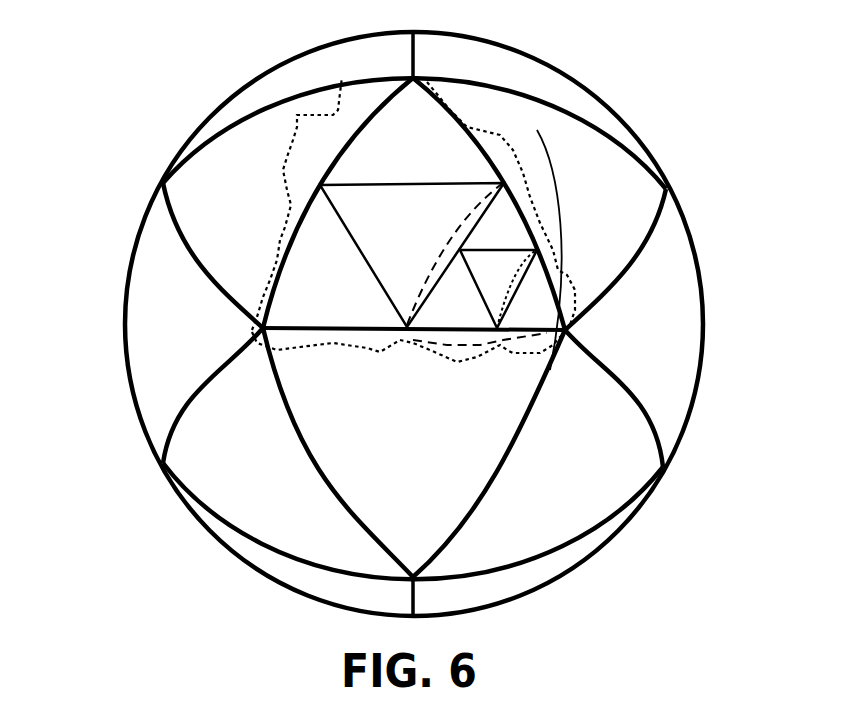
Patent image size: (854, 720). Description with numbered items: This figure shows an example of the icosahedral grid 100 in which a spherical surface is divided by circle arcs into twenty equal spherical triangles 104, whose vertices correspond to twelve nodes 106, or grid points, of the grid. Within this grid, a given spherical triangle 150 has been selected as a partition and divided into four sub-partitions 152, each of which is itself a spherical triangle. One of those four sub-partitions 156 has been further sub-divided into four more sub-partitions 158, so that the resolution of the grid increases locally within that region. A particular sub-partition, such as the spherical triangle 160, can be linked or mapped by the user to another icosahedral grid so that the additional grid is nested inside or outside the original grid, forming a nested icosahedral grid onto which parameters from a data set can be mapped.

The icosahedral grid 100 is at (115, 52).
The spherical triangle 104 is at (672, 258).
The node 106 is at (483, 78).
The given spherical triangle 150 is at (288, 145).
The sub-partition 152 is at (427, 165).
The sub-partition 156 is at (527, 174).
The sub-partition 158 is at (520, 245).
The spherical triangle 160 is at (553, 270).